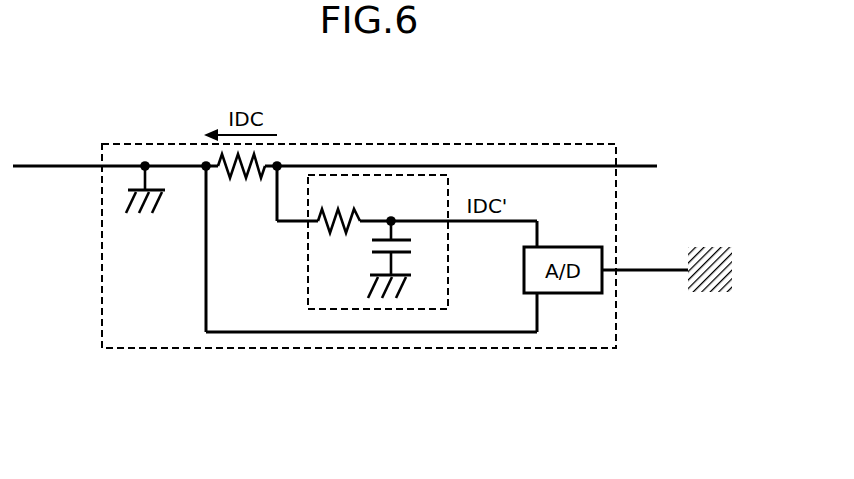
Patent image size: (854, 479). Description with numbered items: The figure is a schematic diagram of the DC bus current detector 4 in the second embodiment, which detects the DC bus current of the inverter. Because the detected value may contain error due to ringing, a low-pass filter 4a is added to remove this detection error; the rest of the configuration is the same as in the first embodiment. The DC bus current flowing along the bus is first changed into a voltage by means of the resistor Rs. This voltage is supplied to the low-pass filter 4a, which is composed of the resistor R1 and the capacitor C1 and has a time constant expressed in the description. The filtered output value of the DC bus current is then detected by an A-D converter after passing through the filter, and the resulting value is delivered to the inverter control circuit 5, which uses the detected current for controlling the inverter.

The DC bus current detector 4 is at (381, 143).
The low-pass filter 4a is at (404, 242).
The inverter control circuit 5 is at (716, 247).
The resistor Rs is at (241, 181).
The resistor R1 is at (339, 209).
The capacitor C1 is at (406, 248).